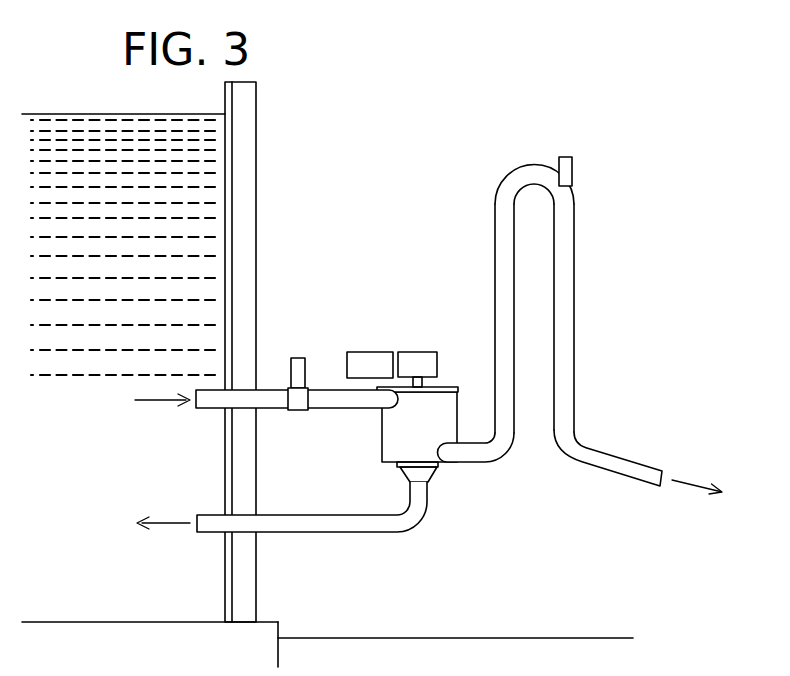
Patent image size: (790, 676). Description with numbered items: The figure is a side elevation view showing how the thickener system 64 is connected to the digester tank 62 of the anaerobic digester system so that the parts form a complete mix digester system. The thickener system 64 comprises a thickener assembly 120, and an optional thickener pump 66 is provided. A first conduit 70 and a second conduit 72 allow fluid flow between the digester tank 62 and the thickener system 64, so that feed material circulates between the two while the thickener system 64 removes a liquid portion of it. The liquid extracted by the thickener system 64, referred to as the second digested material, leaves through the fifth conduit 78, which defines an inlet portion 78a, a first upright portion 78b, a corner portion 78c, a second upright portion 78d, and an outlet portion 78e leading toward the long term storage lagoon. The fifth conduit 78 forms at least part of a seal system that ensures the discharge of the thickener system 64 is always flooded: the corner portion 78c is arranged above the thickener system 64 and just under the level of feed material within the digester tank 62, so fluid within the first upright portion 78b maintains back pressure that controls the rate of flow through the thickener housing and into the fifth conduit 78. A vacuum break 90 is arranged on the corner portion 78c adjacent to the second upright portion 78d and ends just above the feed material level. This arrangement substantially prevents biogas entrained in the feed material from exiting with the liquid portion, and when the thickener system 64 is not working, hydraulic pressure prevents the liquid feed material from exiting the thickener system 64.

The digester tank 62 is at (229, 229).
The thickener system 64 is at (390, 430).
The thickener pump 66 is at (298, 357).
The first conduit 70 is at (328, 394).
The second conduit 72 is at (327, 527).
The fifth conduit 78 is at (560, 323).
The inlet portion 78a is at (470, 455).
The first upright portion 78b is at (497, 260).
The corner portion 78c is at (523, 175).
The second upright portion 78d is at (565, 333).
The outlet portion 78e is at (620, 462).
The vacuum break 90 is at (573, 170).
The thickener assembly 120 is at (416, 328).